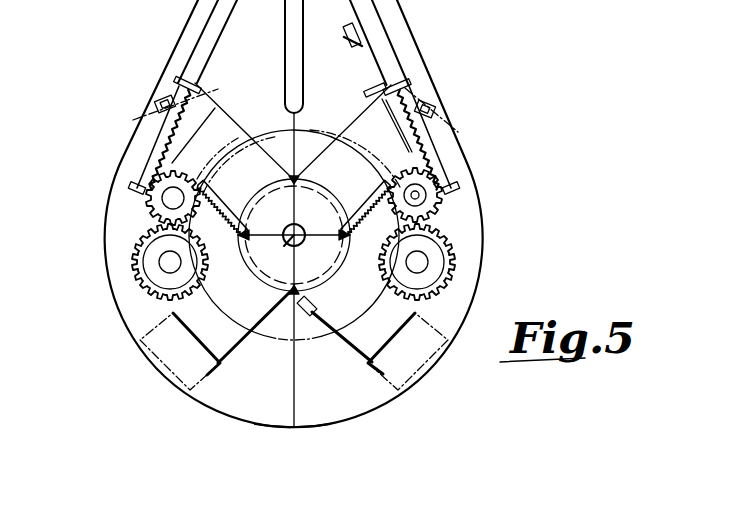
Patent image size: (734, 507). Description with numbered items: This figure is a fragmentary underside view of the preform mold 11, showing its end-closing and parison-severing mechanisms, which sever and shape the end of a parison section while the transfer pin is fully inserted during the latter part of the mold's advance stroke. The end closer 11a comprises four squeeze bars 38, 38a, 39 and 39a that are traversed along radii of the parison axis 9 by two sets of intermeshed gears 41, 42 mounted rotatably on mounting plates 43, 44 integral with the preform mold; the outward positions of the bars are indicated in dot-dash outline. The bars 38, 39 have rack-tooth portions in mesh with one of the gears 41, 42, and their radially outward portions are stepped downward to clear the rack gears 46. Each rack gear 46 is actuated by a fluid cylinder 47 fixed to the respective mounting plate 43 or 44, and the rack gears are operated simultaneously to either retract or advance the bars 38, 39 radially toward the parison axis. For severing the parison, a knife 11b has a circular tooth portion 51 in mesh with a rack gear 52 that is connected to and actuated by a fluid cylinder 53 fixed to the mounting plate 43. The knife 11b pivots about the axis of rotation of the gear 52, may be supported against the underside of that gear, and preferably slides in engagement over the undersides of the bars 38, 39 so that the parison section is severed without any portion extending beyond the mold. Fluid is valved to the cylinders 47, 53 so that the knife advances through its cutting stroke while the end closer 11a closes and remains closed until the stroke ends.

The parison axis 9 is at (298, 240).
The preform mold 11 is at (186, 403).
The end closer 11a is at (147, 212).
The cutoff knife 11b is at (304, 318).
The squeeze bar 38 is at (208, 120).
The squeeze bar 38a is at (383, 343).
The squeeze bar 39 is at (372, 95).
The squeeze bar 39a is at (197, 340).
The gear 41 is at (143, 289).
The gear 42 is at (160, 222).
The mounting plate 43 is at (310, 427).
The mounting plate 44 is at (277, 427).
The rack gear 46 is at (156, 117).
The fluid cylinder 47 is at (193, 47).
The circular tooth portion 51 is at (383, 158).
The rack gear 52 is at (438, 208).
The fluid cylinder 53 is at (380, 60).